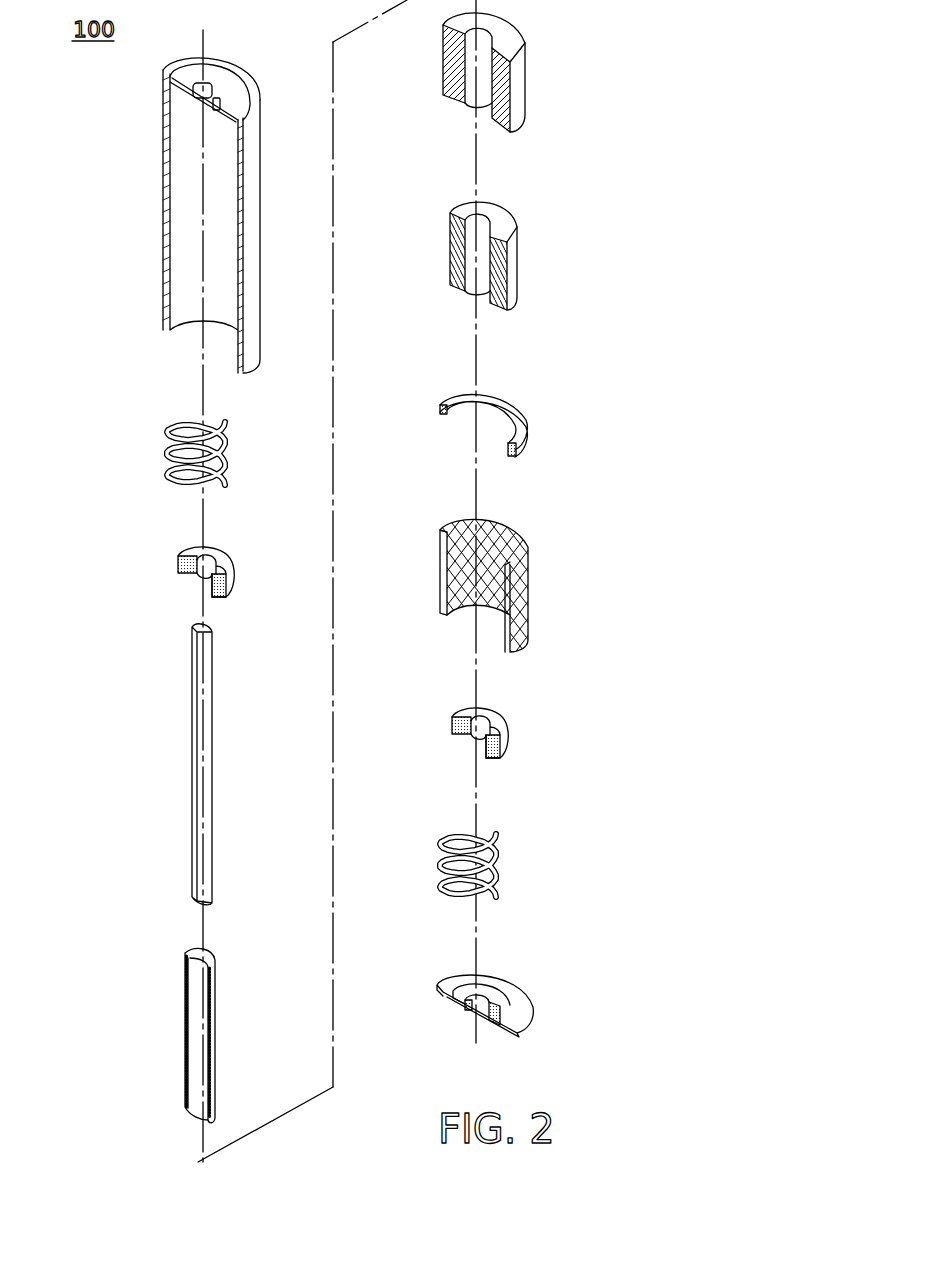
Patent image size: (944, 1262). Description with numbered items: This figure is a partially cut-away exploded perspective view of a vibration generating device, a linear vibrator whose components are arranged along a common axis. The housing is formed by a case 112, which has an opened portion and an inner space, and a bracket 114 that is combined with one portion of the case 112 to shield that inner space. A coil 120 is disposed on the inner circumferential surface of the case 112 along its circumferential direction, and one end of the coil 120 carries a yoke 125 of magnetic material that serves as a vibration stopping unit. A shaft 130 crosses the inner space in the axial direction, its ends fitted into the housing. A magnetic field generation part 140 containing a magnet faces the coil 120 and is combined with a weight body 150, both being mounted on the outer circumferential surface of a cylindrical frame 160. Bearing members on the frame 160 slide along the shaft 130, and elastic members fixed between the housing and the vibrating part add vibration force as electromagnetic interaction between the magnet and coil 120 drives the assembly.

The case 112 is at (163, 185).
The bracket 114 is at (522, 1013).
The coil 120 is at (522, 585).
The yoke 125 is at (522, 420).
The shaft 130 is at (195, 698).
The magnetic field generation part 140 is at (510, 265).
The weight body 150 is at (507, 80).
The frame 160 is at (196, 1043).